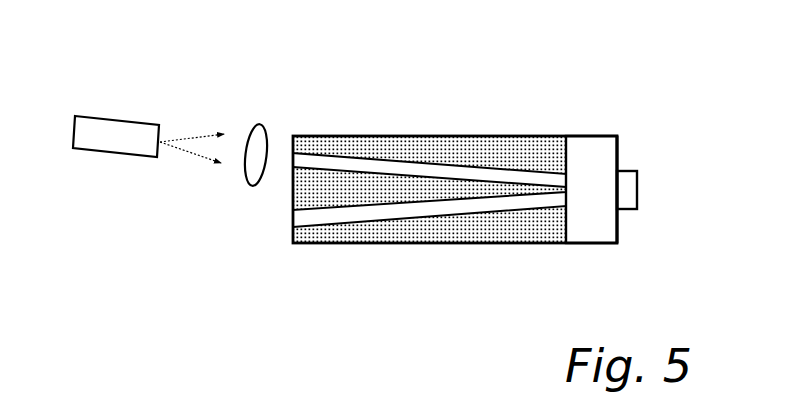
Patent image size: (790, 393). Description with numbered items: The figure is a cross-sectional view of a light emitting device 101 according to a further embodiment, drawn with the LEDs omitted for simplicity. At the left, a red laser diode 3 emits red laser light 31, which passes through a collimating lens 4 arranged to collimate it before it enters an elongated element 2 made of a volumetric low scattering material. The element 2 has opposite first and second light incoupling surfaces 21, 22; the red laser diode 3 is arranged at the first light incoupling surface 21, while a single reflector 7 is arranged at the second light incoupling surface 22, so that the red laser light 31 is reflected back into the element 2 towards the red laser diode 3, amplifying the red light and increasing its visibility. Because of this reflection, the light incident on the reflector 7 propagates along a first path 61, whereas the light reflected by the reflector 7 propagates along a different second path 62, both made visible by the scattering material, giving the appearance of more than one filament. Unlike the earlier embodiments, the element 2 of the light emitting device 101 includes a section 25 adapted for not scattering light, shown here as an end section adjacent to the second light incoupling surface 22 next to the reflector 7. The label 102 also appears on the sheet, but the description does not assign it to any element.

The element 2 is at (513, 135).
The red laser diode 3 is at (115, 132).
The collimating lens 4 is at (260, 133).
The reflector 7 is at (638, 190).
The first light incoupling surface 21 is at (293, 202).
The second light incoupling surface 22 is at (618, 223).
The section adapted for not scattering light 25 is at (598, 210).
The red laser light 31 is at (188, 135).
The first path 61 is at (427, 170).
The second path 62 is at (383, 215).
The light emitting device 101 is at (365, 100).
The device 102 is at (405, 381).